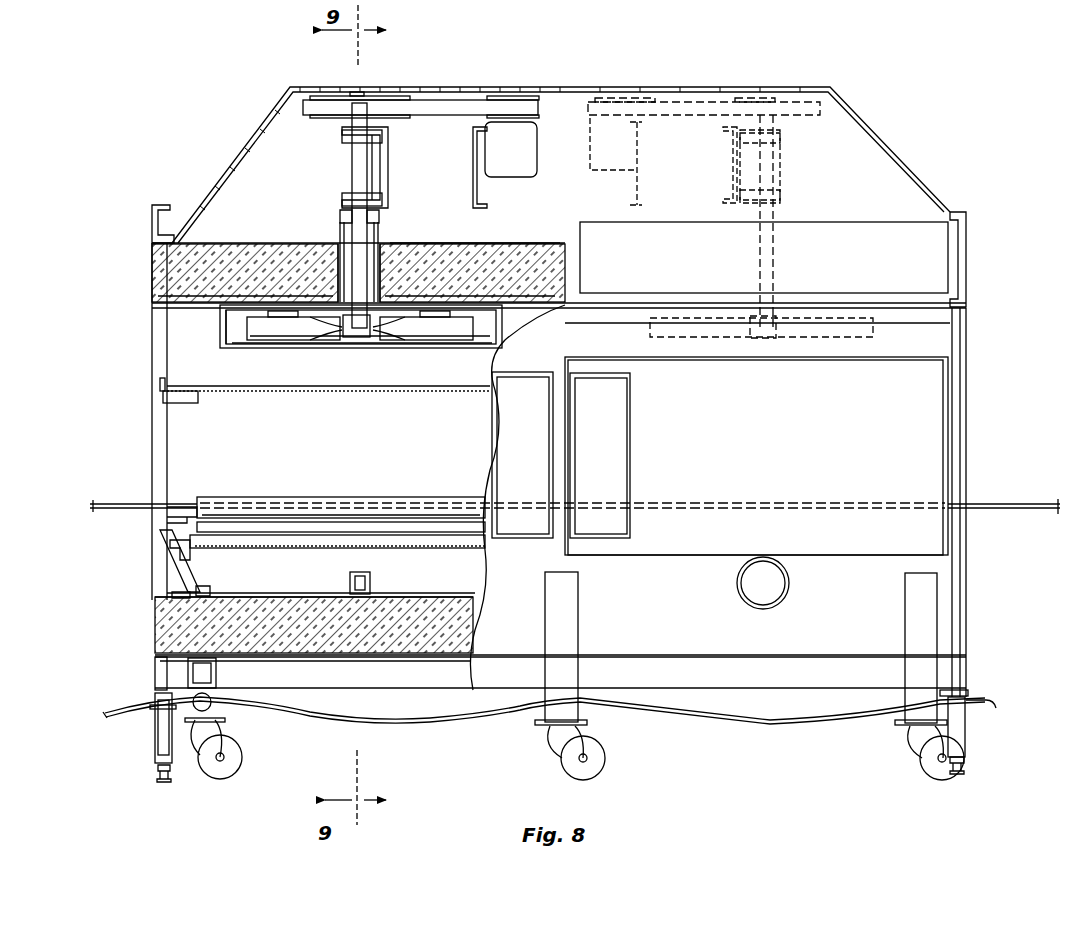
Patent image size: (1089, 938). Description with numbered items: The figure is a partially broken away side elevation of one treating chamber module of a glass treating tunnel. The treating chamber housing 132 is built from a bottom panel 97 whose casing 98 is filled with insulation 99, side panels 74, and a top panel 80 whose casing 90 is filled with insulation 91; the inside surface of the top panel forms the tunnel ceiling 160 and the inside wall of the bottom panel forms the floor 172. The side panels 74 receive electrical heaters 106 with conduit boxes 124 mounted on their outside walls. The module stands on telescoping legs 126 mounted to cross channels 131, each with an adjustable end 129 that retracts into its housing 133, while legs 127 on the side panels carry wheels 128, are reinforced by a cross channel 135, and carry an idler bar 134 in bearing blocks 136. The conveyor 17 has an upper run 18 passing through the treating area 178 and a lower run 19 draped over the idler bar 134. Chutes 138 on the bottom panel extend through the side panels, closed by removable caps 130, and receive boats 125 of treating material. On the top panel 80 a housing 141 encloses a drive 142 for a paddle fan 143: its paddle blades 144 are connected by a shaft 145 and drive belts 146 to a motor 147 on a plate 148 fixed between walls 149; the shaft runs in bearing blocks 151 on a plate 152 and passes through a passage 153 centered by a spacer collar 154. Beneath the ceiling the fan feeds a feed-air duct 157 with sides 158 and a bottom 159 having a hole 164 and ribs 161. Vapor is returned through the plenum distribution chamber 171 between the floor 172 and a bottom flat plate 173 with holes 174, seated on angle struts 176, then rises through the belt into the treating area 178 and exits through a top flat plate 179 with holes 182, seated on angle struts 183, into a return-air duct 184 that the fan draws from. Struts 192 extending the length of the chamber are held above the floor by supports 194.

The conveyor 17 is at (85, 508).
The upper run 18 is at (111, 514).
The lower run 19 is at (990, 699).
The side panel 74 is at (943, 564).
The top panel 80 is at (514, 243).
The casing 90 is at (475, 226).
The insulation 91 is at (538, 277).
The bottom panel 97 is at (380, 660).
The casing 98 is at (455, 660).
The insulation 99 is at (467, 628).
The electrical heater 106 is at (482, 428).
The conduit box 124 is at (570, 455).
The boat 125 is at (372, 582).
The telescoping leg 126 is at (155, 750).
The leg 127 is at (218, 677).
The wheel 128 is at (240, 760).
The adjustable end 129 is at (166, 769).
The removable cap 130 is at (768, 602).
The cross channel 131 is at (153, 672).
The treating chamber housing 132 is at (178, 437).
The housing 133 is at (158, 730).
The idler bar 134 is at (213, 712).
The cross channel 135 is at (208, 699).
The bearing block 136 is at (200, 707).
The chute 138 is at (350, 586).
The housing 141 is at (210, 172).
The drive 142 is at (318, 180).
The paddle fan 143 is at (320, 332).
The paddle blades 144 is at (292, 345).
The shaft 145 is at (370, 188).
The drive belt 146 is at (448, 104).
The motor 147 is at (563, 161).
The plate 148 is at (486, 189).
The wall 149 is at (260, 155).
The bearing block 151 is at (346, 133).
The plate 152 is at (372, 152).
The passage 153 is at (342, 262).
The spacer collar 154 is at (372, 222).
The feed-air duct 157 is at (485, 328).
The side 158 is at (224, 326).
The bottom 159 is at (237, 345).
The ceiling 160 is at (533, 299).
The rib 161 is at (406, 318).
The hole 164 is at (402, 348).
The plenum distribution chamber 171 is at (475, 582).
The floor 172 is at (471, 606).
The bottom flat plate 173 is at (301, 547).
The holes 174 is at (328, 548).
The angle strut 176 is at (198, 554).
The treating area 178 is at (375, 440).
The top flat plate 179 is at (250, 392).
The holes 182 is at (346, 394).
The angle strut 183 is at (185, 402).
The return-air duct 184 is at (453, 378).
The strut 192 is at (320, 500).
The support 194 is at (160, 547).